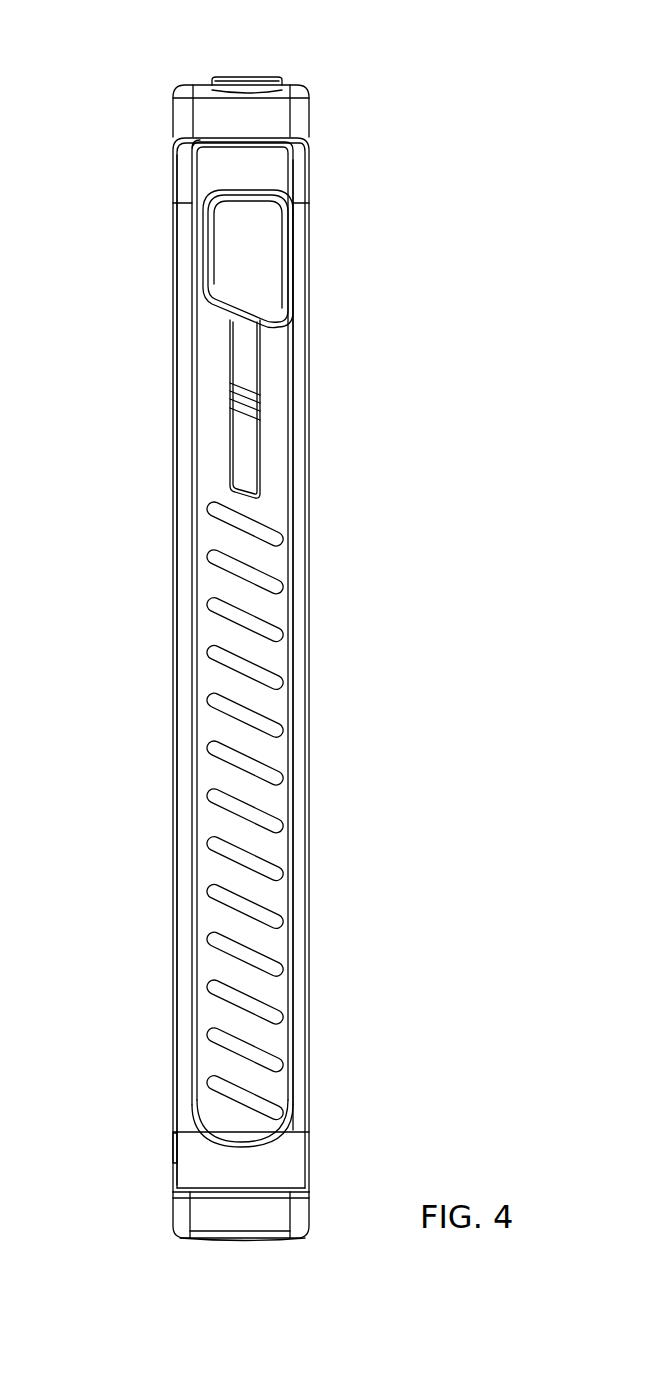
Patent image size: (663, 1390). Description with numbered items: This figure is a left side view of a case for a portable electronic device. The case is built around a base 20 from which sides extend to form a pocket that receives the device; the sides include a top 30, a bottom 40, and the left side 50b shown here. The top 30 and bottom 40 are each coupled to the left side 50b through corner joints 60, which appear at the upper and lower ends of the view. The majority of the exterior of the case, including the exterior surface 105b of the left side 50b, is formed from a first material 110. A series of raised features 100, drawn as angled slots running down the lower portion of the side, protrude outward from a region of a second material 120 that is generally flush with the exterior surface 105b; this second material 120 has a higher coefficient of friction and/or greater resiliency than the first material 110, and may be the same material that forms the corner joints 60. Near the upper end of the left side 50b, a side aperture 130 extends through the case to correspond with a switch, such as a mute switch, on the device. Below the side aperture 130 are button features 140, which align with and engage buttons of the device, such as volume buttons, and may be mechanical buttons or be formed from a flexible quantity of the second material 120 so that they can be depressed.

The base 20 is at (174, 602).
The top 30 is at (202, 82).
The bottom 40 is at (272, 1244).
The left side 50b is at (287, 503).
The corner joints 60 is at (262, 122).
The raised features 100 is at (268, 582).
The exterior surface 105b is at (208, 179).
The first material 110 is at (262, 172).
The second material 120 is at (272, 703).
The side aperture 130 is at (253, 262).
The button features 140 is at (250, 353).